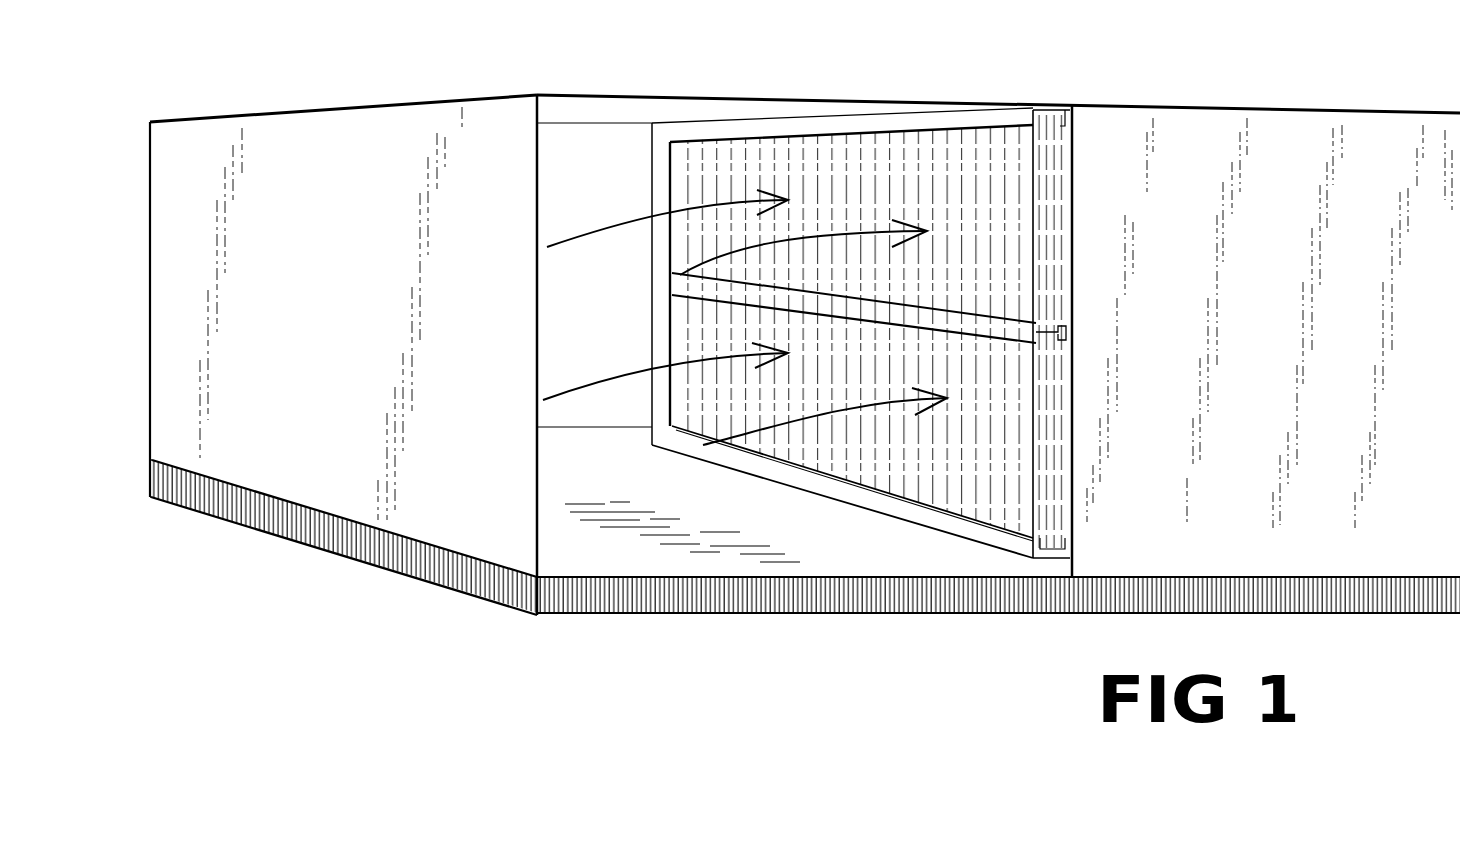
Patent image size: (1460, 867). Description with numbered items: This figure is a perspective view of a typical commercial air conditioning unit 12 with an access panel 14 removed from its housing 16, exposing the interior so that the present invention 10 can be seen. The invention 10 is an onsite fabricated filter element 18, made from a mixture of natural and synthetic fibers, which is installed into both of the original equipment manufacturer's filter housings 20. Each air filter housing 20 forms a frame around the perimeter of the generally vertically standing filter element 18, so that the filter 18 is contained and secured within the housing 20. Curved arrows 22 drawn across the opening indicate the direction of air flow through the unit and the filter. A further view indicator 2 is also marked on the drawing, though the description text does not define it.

The viewing direction of FIG. 2 is at (642, 466).
The present invention 10 is at (733, 472).
The commercial air conditioning unit 12 is at (277, 483).
The access panel 14 is at (582, 135).
The housing 16 is at (1117, 120).
The filter element 18 is at (978, 500).
The filter housing 20 is at (842, 128).
The arrows 22 is at (618, 226).